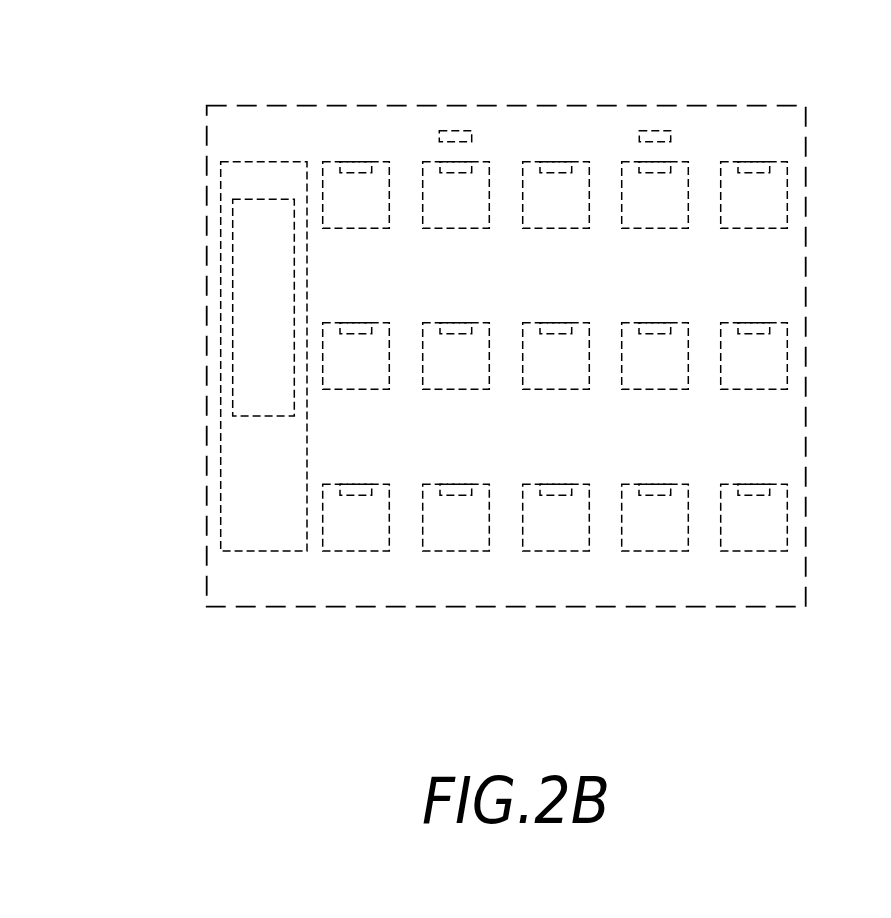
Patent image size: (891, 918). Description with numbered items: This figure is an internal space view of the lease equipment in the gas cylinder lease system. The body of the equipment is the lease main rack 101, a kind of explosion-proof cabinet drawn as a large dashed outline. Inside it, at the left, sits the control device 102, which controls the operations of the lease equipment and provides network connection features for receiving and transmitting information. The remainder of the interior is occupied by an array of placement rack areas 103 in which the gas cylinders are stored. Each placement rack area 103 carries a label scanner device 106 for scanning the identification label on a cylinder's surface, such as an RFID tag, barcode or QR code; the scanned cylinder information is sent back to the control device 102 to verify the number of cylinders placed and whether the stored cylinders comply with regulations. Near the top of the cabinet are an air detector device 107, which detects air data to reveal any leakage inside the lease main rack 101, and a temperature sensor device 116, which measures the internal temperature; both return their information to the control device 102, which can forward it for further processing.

The lease main rack 101 is at (760, 105).
The control device 102 is at (233, 274).
The placement rack area 103 is at (334, 162).
The label scanner device 106 is at (354, 162).
The air detector device 107 is at (457, 130).
The temperature sensor device 116 is at (655, 130).